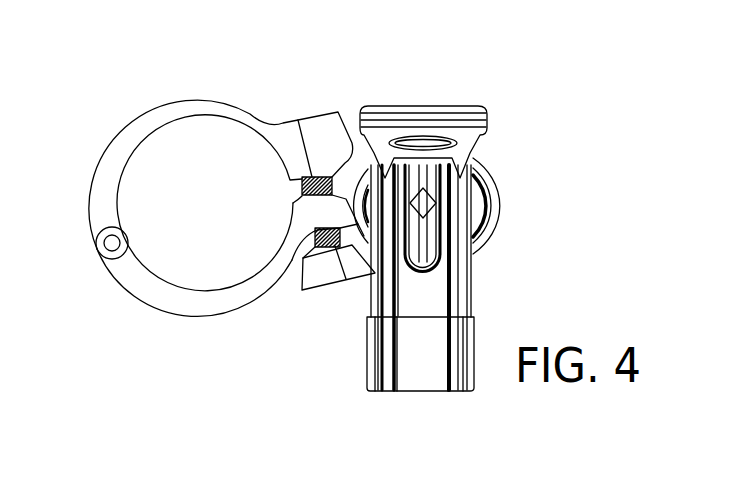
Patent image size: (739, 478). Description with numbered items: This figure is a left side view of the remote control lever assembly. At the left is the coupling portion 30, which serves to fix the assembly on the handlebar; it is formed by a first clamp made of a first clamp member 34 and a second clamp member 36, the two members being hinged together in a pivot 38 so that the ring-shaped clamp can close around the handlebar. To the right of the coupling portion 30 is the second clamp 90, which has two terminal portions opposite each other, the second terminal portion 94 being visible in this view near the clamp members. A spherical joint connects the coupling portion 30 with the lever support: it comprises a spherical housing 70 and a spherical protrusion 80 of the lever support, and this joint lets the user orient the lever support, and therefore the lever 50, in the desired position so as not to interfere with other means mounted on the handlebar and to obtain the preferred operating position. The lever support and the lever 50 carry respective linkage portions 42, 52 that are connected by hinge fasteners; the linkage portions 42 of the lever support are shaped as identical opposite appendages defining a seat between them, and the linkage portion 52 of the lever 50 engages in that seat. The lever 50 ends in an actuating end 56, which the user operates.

The coupling portion 30 is at (190, 218).
The first clamp member 34 is at (192, 303).
The second clamp member 36 is at (216, 112).
The pivot 38 is at (104, 249).
The second terminal portion 94 is at (308, 287).
The lever 50 is at (481, 239).
The actuating end 56 is at (456, 114).
The spherical housing 70 is at (458, 205).
The spherical protrusion 80 is at (462, 273).
The second clamp 90 is at (520, 200).
The linkage portions 42 is at (380, 391).
The linkage portion 52 is at (422, 383).